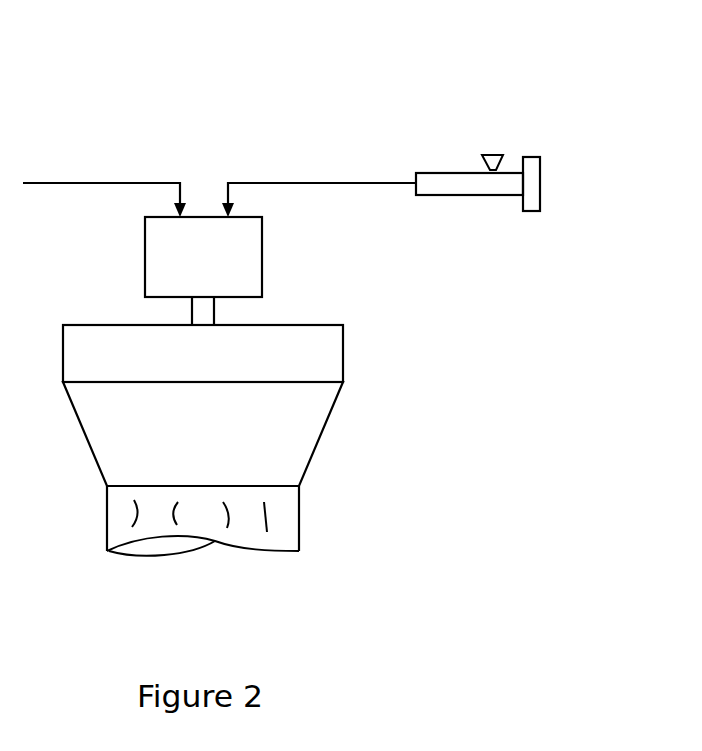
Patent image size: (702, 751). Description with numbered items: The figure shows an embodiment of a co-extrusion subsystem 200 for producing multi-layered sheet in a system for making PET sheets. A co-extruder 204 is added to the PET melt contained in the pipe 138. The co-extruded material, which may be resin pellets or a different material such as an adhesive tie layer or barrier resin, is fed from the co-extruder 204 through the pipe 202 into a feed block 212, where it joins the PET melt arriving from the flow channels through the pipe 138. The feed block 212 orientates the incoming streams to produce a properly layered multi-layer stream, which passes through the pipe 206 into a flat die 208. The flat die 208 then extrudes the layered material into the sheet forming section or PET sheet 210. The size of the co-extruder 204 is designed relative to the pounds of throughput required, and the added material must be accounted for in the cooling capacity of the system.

The co-extrusion subsystem 200 is at (548, 111).
The pipe 138 is at (68, 183).
The pipe 202 is at (277, 183).
The co-extruder 204 is at (440, 173).
The pipe 206 is at (215, 308).
The flat die 208 is at (343, 350).
The PET sheet 210 is at (107, 520).
The feed block 212 is at (145, 258).